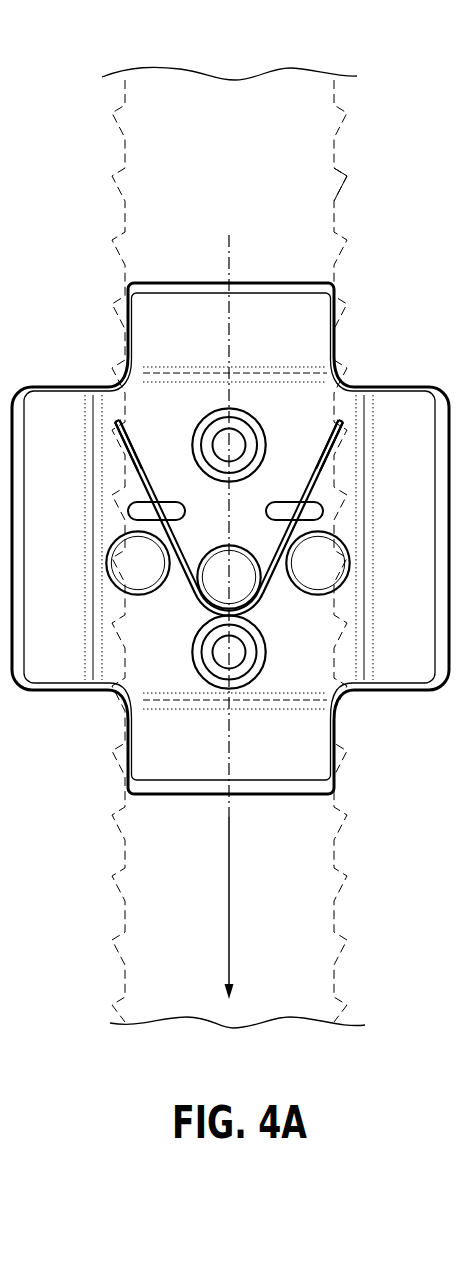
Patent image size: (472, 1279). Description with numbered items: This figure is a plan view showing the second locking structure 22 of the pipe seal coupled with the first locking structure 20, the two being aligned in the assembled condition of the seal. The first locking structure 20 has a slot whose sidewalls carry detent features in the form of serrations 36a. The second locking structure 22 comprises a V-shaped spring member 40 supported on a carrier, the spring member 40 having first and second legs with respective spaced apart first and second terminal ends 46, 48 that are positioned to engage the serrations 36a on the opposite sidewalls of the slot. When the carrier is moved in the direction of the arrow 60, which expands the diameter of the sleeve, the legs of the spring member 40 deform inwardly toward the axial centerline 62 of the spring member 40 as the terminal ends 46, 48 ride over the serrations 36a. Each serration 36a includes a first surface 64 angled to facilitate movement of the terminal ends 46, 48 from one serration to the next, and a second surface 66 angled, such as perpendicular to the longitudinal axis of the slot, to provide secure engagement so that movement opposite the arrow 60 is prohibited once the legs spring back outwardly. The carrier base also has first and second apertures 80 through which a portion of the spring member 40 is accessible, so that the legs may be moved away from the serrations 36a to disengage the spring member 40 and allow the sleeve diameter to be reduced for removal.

The first locking structure 20 is at (284, 80).
The second locking structure 22 is at (95, 373).
The serrations 36a is at (138, 124).
The V-shaped spring member 40 is at (134, 464).
The first terminal end 46 is at (120, 422).
The second terminal end 48 is at (341, 423).
The arrow 60 is at (228, 898).
The axial centerline 62 is at (228, 247).
The first surface 64 is at (342, 189).
The second surface 66 is at (339, 170).
The aperture 80 is at (130, 503).